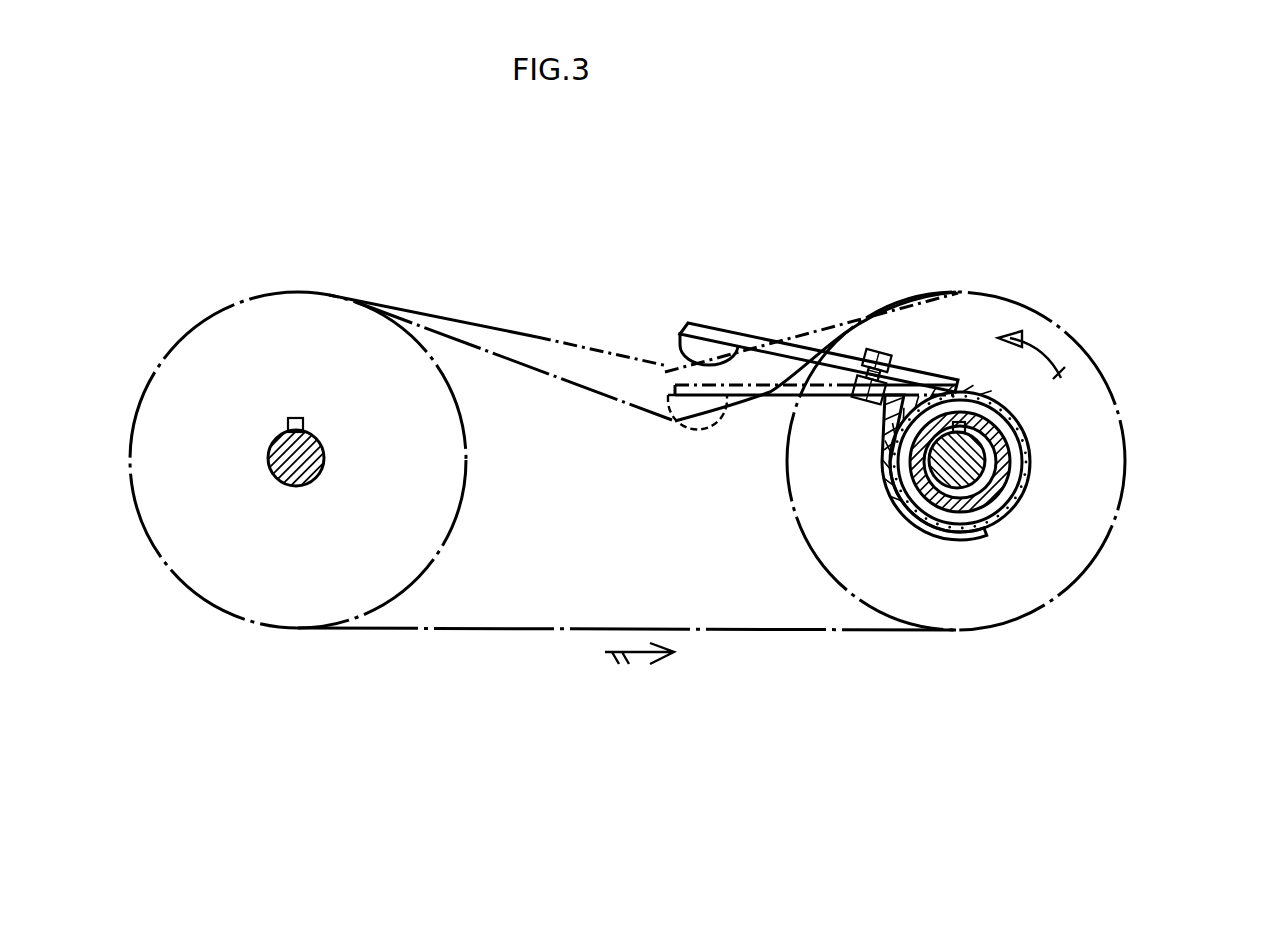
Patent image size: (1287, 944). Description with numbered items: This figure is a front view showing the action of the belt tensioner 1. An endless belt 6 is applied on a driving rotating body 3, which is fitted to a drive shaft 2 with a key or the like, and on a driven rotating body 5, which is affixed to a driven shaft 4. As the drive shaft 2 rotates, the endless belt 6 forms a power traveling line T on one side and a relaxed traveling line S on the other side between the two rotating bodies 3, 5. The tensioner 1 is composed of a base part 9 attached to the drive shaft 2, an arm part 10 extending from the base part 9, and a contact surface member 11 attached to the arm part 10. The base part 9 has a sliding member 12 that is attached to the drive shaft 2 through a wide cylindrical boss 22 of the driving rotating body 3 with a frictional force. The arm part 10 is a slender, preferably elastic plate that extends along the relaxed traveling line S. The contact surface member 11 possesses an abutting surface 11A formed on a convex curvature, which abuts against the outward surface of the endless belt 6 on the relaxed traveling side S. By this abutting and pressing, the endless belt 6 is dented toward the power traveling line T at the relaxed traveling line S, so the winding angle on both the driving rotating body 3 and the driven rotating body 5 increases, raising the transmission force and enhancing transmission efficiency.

The tensioner 1 is at (897, 278).
The drive shaft 2 is at (970, 454).
The driving rotating body 3 is at (872, 577).
The driven shaft 4 is at (272, 468).
The driven rotating body 5 is at (237, 583).
The endless belt 6 is at (721, 642).
The base part 9 is at (1007, 400).
The arm part 10 is at (787, 447).
The contact surface member 11 is at (700, 353).
The abutting surface 11A is at (678, 361).
The sliding member 12 is at (1010, 418).
The boss 22 is at (985, 522).
The relaxed traveling line S is at (503, 323).
The power traveling line T is at (573, 630).